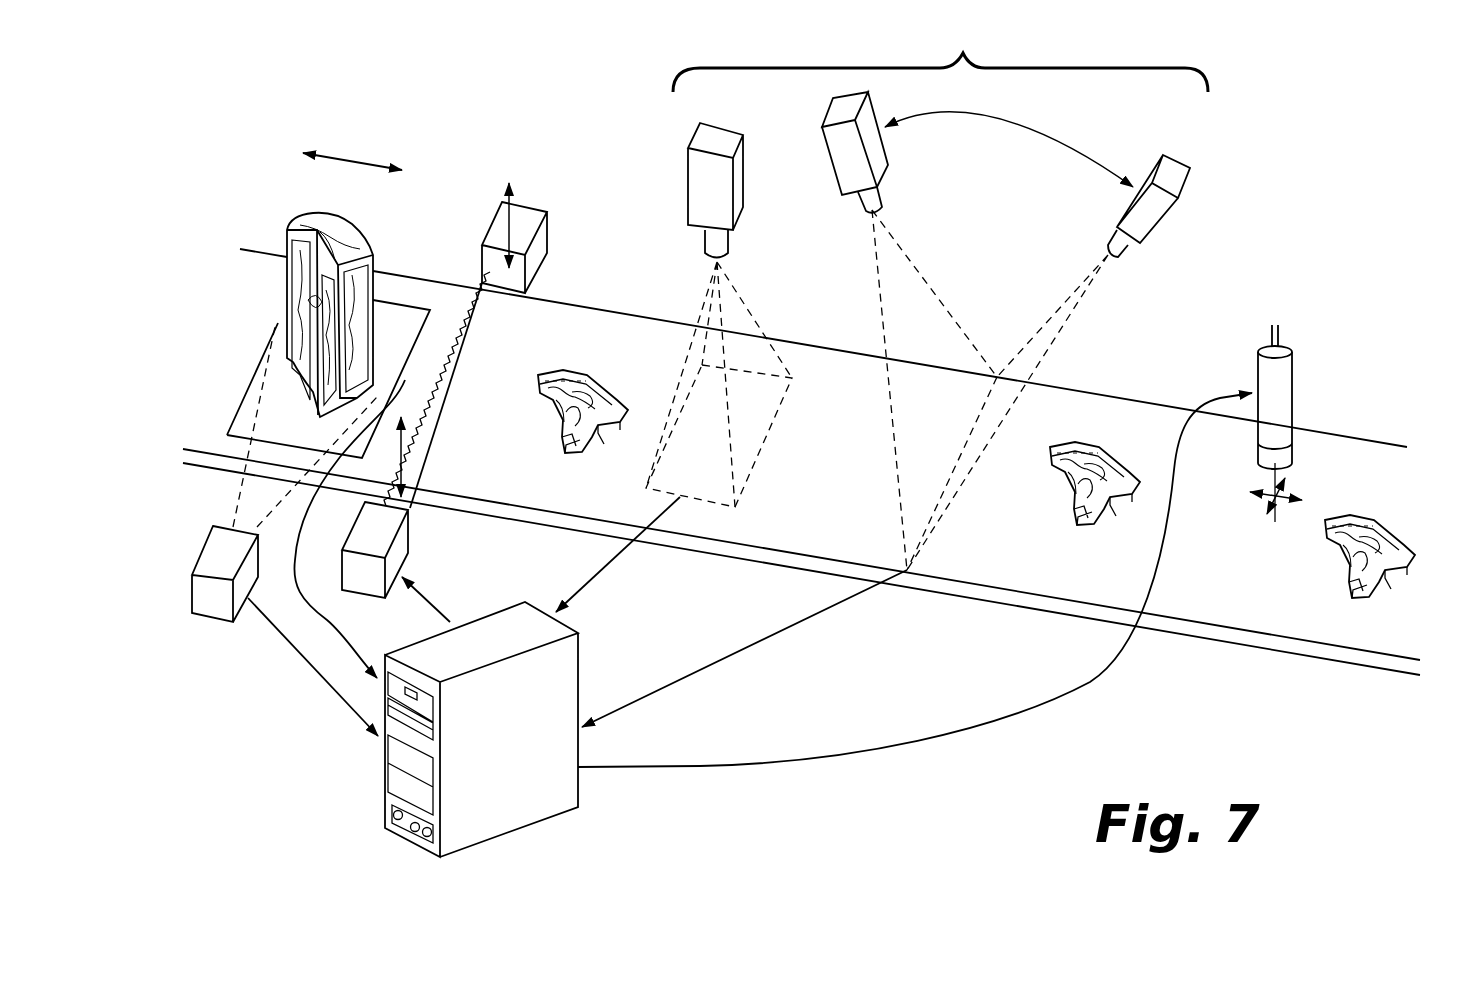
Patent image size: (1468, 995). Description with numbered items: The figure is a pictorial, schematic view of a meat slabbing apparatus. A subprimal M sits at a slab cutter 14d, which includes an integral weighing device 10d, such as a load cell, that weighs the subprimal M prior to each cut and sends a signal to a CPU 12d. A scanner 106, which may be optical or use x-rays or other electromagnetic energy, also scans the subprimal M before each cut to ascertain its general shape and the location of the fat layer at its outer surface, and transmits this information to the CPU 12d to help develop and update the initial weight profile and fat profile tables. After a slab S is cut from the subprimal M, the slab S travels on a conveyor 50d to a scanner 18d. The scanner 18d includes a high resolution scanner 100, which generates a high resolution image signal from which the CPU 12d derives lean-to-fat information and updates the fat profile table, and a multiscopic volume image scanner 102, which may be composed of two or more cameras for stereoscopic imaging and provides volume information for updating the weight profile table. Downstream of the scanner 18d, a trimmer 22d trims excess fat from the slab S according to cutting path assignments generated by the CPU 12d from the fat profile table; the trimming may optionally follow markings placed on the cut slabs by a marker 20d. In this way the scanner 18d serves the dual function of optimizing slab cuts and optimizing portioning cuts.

The subprimal M is at (310, 218).
The slab S is at (560, 410).
The weighing device 10d is at (403, 323).
The CPU 12d is at (545, 803).
The slab cutter 14d is at (483, 318).
The scanner 18d is at (882, 376).
The marker 20d is at (1009, 546).
The trimmer 22d is at (1287, 382).
The conveyor 50d is at (1283, 628).
The high resolution scanner 100 is at (700, 180).
The multiscopic volume image scanner 102 is at (1043, 132).
The scanner 106 is at (213, 603).